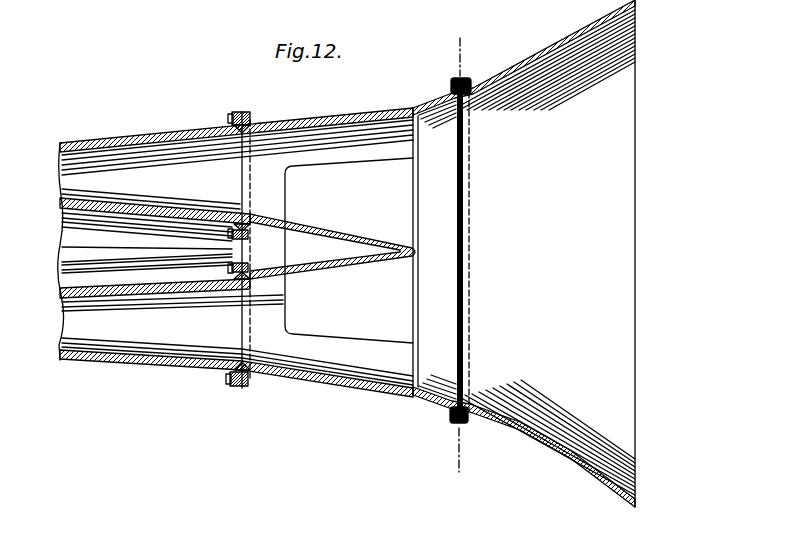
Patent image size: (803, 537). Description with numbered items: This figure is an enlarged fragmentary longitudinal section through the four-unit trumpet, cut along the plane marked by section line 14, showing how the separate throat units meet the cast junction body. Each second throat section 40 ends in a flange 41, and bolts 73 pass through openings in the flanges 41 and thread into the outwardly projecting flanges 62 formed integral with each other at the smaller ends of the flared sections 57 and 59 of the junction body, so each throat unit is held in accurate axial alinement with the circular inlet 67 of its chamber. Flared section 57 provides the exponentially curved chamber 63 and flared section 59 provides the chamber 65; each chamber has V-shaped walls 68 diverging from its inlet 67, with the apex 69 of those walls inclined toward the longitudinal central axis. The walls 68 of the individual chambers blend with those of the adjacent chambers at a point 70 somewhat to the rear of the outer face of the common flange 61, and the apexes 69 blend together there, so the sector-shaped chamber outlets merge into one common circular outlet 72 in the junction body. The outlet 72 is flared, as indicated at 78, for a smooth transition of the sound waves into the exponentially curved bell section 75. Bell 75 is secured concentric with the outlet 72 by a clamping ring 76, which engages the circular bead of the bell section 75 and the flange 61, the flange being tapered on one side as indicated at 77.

The section line 14 is at (483, 45).
The second throat section 40 is at (106, 143).
The flange 41 is at (240, 112).
The flared section 57 is at (326, 117).
The flared section 59 is at (337, 392).
The outwardly projecting flange 61 is at (466, 110).
The outwardly projecting flange 62 is at (249, 113).
The exponentially curved chamber 63 is at (370, 135).
The exponentially curved chamber 65 is at (377, 368).
The circular inlet 67 is at (257, 162).
The V-shaped wall 68 is at (396, 196).
The apex 69 is at (340, 233).
The blending point 70 is at (417, 226).
The common circular outlet 72 is at (464, 335).
The bolt 73 is at (230, 118).
The bell section 75 is at (550, 50).
The clamping ring 76 is at (453, 421).
The tapered portion 77 is at (466, 396).
The flare 78 is at (428, 382).